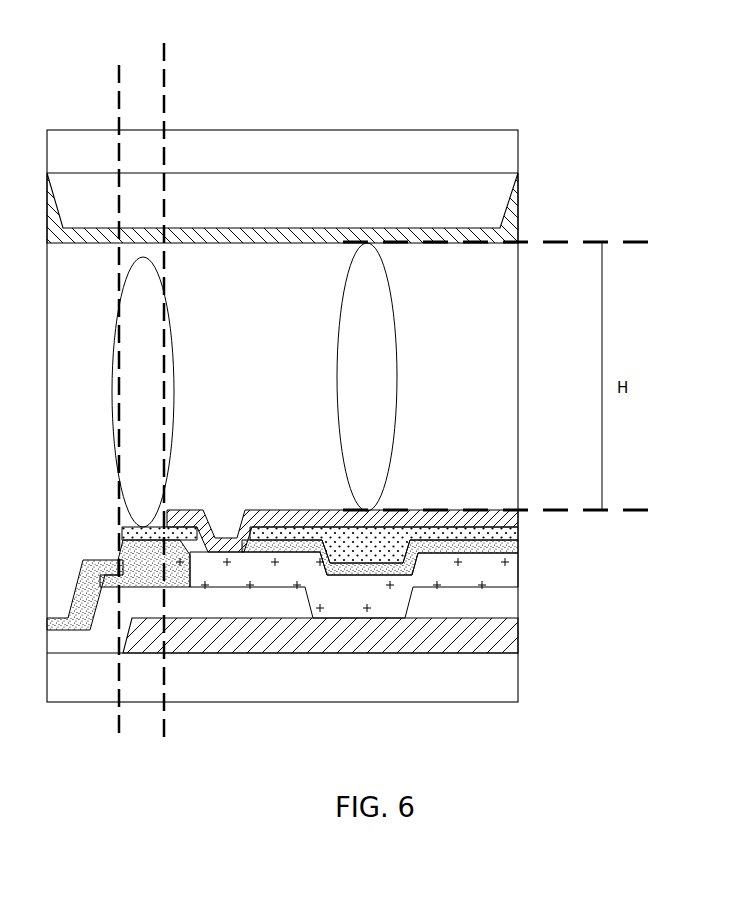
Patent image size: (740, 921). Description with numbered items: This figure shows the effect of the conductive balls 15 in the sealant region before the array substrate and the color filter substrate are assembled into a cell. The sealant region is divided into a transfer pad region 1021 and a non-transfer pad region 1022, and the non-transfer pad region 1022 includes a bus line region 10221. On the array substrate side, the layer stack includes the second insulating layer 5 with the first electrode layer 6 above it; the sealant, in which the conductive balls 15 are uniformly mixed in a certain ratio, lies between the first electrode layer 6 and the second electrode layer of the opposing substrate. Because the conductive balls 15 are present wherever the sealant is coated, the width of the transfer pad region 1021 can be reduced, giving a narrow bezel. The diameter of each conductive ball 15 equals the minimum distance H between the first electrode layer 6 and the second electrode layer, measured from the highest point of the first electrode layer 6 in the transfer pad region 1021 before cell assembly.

The non-transfer pad region 1022 is at (47, 58).
The transfer pad region 1021 is at (164, 47).
The bus line region 10221 is at (164, 96).
The conductive balls 15 is at (379, 423).
The first electrode layer 6 is at (512, 517).
The second insulating layer 5 is at (512, 533).